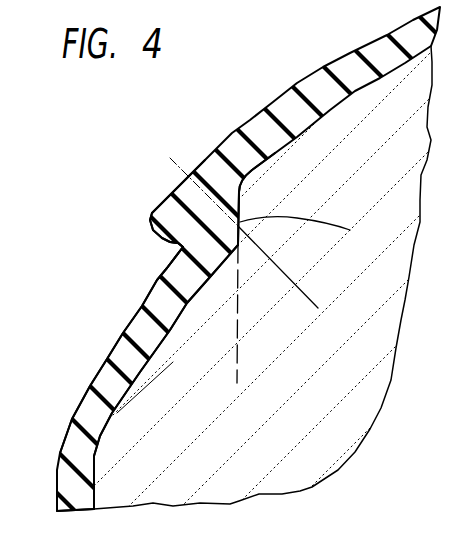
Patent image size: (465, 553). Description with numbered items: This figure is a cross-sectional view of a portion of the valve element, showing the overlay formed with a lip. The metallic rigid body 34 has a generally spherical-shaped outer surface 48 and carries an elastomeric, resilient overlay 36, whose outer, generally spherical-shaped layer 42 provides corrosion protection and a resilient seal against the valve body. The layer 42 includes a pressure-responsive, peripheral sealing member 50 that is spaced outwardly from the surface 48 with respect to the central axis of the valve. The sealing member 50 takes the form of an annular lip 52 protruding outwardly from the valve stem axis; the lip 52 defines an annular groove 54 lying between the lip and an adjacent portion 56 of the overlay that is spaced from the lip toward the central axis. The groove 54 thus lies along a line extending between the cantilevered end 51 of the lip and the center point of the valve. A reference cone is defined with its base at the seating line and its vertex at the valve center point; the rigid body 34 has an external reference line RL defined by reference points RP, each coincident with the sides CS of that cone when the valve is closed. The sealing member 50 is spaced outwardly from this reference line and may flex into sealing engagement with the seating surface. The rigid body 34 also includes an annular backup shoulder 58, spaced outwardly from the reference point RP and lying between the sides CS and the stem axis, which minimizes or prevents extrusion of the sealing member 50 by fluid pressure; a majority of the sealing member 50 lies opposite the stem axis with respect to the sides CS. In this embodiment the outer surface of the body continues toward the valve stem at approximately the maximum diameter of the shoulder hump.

The rigid body 34 is at (355, 384).
The overlay 36 is at (73, 488).
The outer spherical-shaped layer 42 is at (110, 358).
The spherical-shaped outer surface 48 is at (186, 310).
The sealing member 50 is at (142, 253).
The cantilevered end 51 is at (147, 220).
The annular lip 52 is at (167, 212).
The annular groove 54 is at (167, 240).
The adjacent portion of the overlay 56 is at (160, 275).
The backup shoulder 58 is at (242, 188).
The reference point RP is at (311, 228).
The external reference line RL is at (237, 373).
The side of the reference cone CS is at (312, 295).